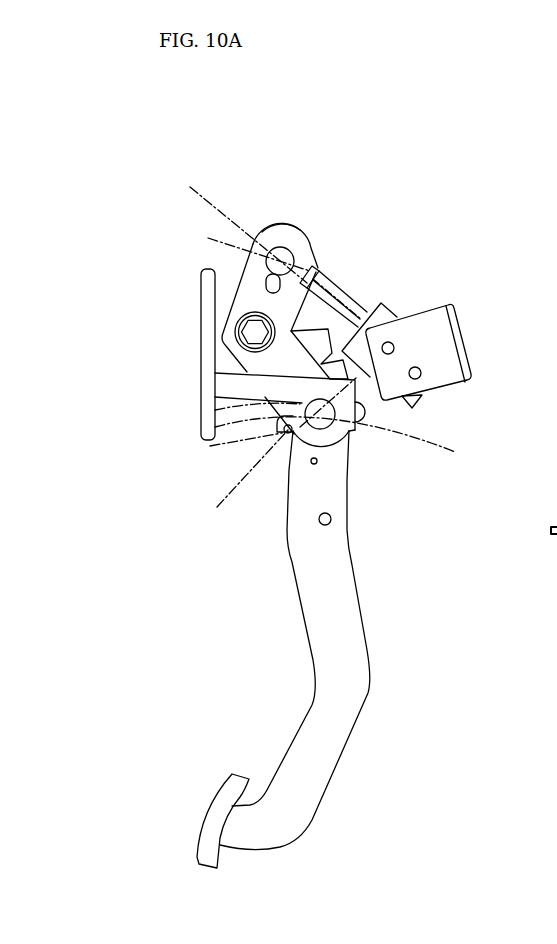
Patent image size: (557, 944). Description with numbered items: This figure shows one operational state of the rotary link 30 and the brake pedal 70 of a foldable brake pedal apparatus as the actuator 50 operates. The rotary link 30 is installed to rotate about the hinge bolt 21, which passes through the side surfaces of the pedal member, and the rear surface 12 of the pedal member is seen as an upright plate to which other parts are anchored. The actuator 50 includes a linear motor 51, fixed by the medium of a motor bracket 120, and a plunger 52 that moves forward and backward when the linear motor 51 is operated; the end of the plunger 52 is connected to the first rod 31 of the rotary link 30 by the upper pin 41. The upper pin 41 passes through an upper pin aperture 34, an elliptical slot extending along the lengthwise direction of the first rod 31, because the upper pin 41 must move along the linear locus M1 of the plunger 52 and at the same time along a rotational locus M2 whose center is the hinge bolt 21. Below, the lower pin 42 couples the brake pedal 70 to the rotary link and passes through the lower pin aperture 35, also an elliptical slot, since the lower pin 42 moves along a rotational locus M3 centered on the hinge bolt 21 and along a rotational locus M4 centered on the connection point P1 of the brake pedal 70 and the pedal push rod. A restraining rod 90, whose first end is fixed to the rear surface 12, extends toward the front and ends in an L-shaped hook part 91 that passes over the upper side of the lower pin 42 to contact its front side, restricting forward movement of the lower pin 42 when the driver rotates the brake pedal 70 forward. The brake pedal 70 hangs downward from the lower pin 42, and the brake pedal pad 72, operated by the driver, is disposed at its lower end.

The rear surface 12 is at (204, 358).
The hinge bolt 21 is at (246, 334).
The rotary link 30 is at (231, 265).
The first rod 31 is at (269, 234).
The upper pin aperture 34 is at (268, 288).
The lower pin aperture 35 is at (305, 413).
The upper pin 41 is at (281, 253).
The lower pin 42 is at (276, 425).
The actuator 50 is at (447, 254).
The linear motor 51 is at (381, 320).
The plunger 52 is at (340, 293).
The brake pedal 70 is at (332, 634).
The brake pedal pad 72 is at (210, 816).
The restraining rod 90 is at (240, 382).
The hook part 91 is at (352, 428).
The motor bracket 120 is at (446, 346).
The connection point P1 is at (332, 519).
The linear locus M1 is at (194, 186).
The rotational locus M2 is at (207, 238).
The rotational locus M3 is at (218, 446).
The rotational locus M4 is at (216, 508).